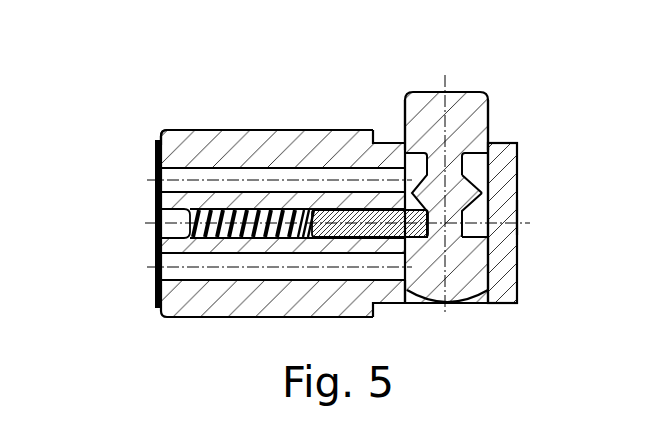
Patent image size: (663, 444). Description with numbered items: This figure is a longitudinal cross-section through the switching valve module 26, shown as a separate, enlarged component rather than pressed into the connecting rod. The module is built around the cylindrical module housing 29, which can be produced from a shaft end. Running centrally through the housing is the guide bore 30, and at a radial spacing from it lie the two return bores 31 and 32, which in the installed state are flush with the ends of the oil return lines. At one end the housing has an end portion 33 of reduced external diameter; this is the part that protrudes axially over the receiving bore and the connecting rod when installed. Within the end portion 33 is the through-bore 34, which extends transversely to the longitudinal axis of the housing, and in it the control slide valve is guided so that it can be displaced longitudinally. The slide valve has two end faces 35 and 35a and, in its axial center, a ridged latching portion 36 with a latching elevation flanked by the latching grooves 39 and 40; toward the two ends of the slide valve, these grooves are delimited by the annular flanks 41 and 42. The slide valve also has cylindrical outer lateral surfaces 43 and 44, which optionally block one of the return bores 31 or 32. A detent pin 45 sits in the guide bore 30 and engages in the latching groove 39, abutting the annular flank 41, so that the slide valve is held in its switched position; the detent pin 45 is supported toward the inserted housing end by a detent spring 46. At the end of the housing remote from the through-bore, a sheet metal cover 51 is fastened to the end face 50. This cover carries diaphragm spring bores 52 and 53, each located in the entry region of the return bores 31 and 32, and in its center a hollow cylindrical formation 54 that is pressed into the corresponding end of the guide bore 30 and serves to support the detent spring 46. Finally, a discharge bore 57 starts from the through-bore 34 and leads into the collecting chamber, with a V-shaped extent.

The switching valve module 26 is at (524, 215).
The module housing 29 is at (272, 150).
The guide bore 30 is at (365, 150).
The return bore 31 is at (222, 175).
The return bore 32 is at (257, 272).
The end portion 33 is at (503, 157).
The through-bore 34 is at (478, 156).
The end face 35 is at (468, 118).
The end face 35a is at (453, 306).
The ridged latching portion 36 is at (484, 180).
The latching groove 39 is at (485, 118).
The latching groove 40 is at (474, 219).
The annular flank 41 is at (410, 152).
The annular flank 42 is at (480, 250).
The cylindrical outer lateral surface 43 is at (404, 125).
The cylindrical outer lateral surface 44 is at (413, 302).
The detent pin 45 is at (332, 211).
The detent spring 46 is at (211, 243).
The end face 50 is at (163, 134).
The sheet metal cover 51 is at (157, 150).
The diaphragm spring bore 52 is at (157, 182).
The diaphragm spring bore 53 is at (157, 264).
The hollow cylindrical formation 54 is at (178, 224).
The discharge bore 57 is at (460, 150).